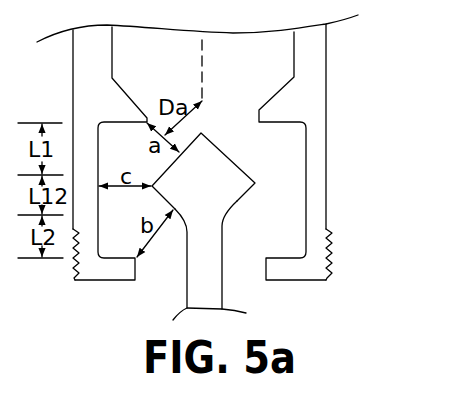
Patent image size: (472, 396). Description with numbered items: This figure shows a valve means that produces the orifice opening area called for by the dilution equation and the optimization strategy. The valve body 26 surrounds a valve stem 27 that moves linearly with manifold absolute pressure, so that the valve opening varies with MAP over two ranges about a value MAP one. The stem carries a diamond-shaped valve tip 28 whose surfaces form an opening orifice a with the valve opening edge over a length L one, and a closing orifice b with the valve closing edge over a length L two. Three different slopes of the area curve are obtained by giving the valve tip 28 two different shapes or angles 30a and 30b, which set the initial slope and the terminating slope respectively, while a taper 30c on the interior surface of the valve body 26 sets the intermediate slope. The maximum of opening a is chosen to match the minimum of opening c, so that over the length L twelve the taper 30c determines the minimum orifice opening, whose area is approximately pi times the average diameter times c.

The valve body 26 is at (327, 77).
The valve stem 27 is at (208, 268).
The valve tip 28 is at (218, 194).
The first shape or angle on the valve tip 30a is at (227, 148).
The second shape or angle on the valve tip 30b is at (241, 201).
The taper on the interior surface of the valve body 30c is at (306, 205).